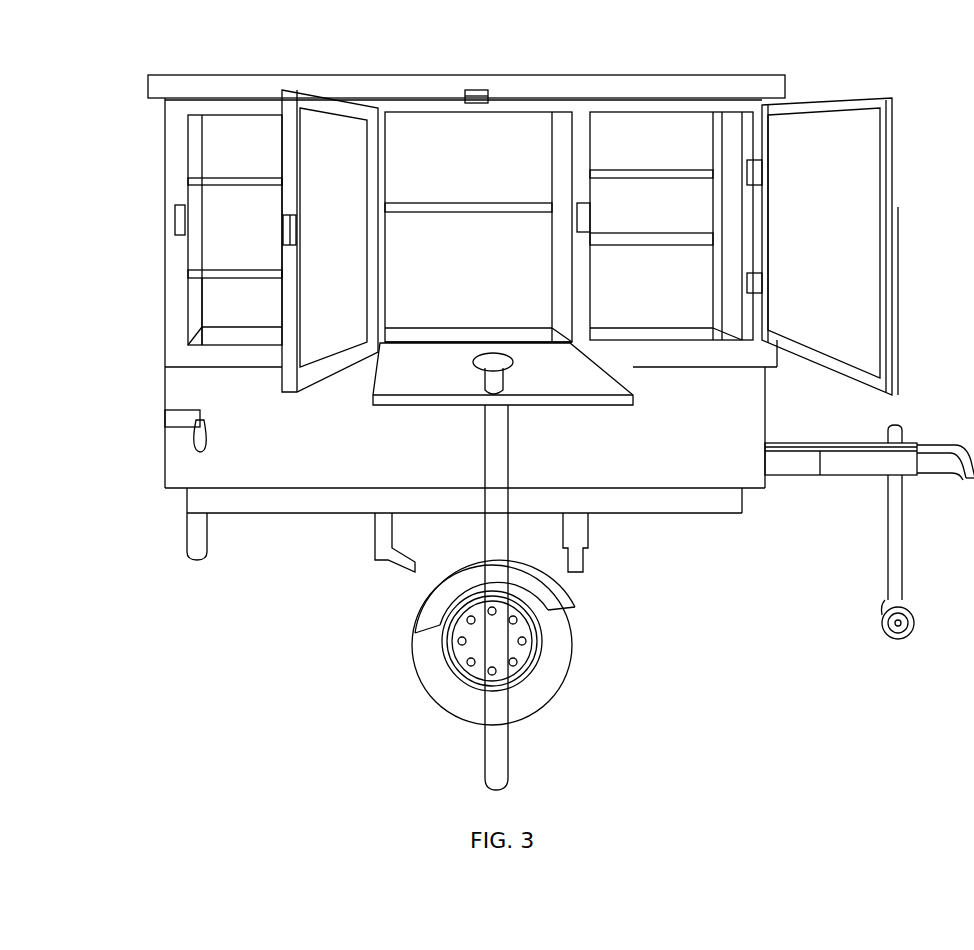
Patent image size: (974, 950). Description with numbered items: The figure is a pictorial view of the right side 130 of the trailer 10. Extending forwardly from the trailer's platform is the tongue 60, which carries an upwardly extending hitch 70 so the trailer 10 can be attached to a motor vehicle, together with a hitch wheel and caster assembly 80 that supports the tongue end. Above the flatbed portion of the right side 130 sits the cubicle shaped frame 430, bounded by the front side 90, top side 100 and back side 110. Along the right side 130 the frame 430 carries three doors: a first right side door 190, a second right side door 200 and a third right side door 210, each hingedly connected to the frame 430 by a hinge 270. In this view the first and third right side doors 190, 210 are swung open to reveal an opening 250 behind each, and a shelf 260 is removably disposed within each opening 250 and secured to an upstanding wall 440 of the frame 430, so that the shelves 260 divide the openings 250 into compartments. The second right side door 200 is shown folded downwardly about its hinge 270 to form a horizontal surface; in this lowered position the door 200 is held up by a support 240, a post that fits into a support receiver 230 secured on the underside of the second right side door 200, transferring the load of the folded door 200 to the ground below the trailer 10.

The trailer 10 is at (926, 94).
The tongue 60 is at (870, 468).
The hitch 70 is at (904, 436).
The hitch wheel and caster assembly 80 is at (912, 622).
The front side 90 is at (816, 88).
The top side 100 is at (645, 72).
The back side 110 is at (162, 140).
The right side 130 is at (670, 422).
The first right side door 190 is at (830, 246).
The second right side door 200 is at (503, 374).
The third right side door 210 is at (330, 241).
The support receiver 230 is at (506, 372).
The support 240 is at (500, 745).
The opening 250 is at (464, 228).
The shelf 260 is at (222, 182).
The hinge 270 is at (545, 341).
The cubicle shaped frame 430 is at (200, 297).
The upstanding wall 440 is at (720, 275).